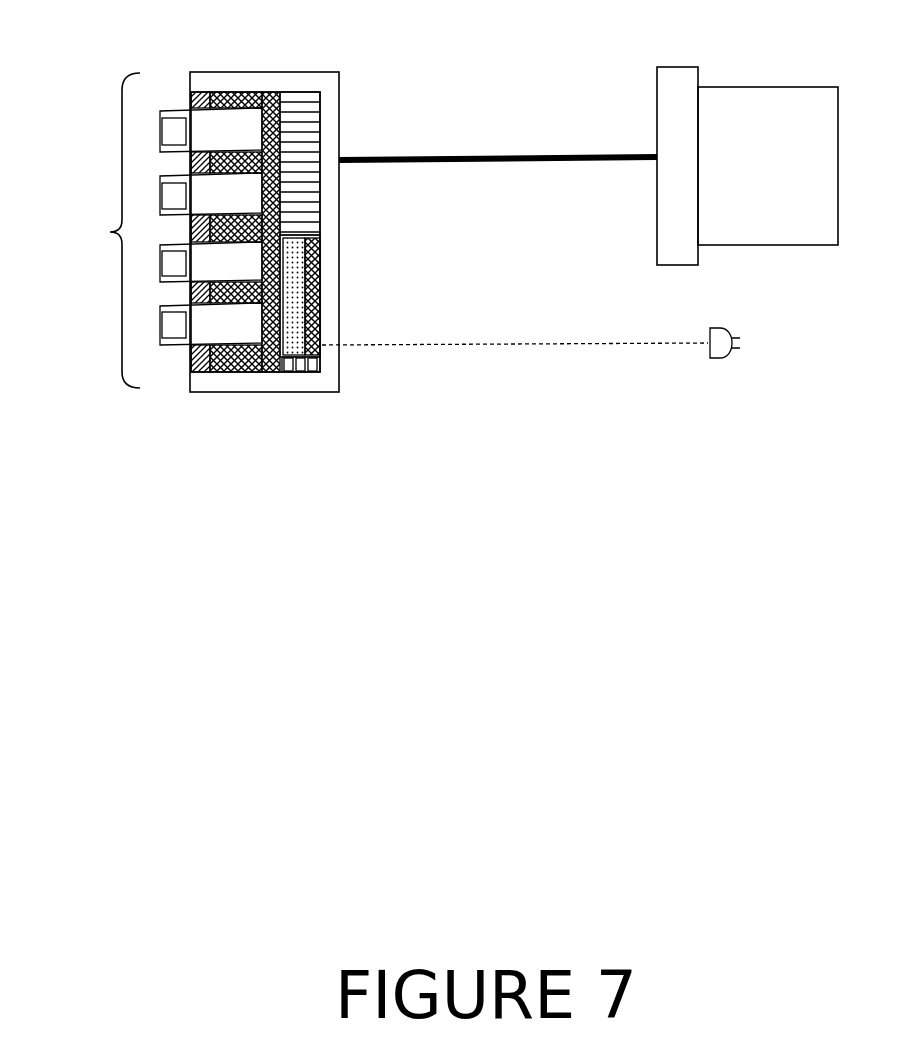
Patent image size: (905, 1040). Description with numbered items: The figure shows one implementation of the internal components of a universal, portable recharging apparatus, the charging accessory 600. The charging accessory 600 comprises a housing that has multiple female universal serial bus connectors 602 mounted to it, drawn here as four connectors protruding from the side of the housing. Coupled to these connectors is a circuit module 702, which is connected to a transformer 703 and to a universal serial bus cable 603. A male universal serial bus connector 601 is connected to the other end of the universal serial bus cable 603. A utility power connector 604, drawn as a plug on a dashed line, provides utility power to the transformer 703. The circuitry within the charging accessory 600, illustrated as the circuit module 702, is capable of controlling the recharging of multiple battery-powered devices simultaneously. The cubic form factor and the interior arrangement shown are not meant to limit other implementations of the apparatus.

The charging accessory 600 is at (260, 392).
The male universal serial bus connector 601 is at (750, 213).
The female universal serial bus connectors 602 is at (110, 232).
The universal serial bus cable 603 is at (548, 155).
The utility power connector 604 is at (560, 345).
The circuit module 702 is at (288, 100).
The transformer 703 is at (320, 292).